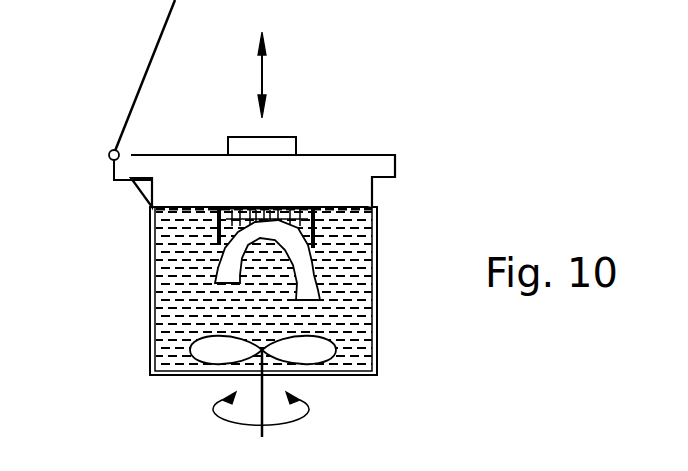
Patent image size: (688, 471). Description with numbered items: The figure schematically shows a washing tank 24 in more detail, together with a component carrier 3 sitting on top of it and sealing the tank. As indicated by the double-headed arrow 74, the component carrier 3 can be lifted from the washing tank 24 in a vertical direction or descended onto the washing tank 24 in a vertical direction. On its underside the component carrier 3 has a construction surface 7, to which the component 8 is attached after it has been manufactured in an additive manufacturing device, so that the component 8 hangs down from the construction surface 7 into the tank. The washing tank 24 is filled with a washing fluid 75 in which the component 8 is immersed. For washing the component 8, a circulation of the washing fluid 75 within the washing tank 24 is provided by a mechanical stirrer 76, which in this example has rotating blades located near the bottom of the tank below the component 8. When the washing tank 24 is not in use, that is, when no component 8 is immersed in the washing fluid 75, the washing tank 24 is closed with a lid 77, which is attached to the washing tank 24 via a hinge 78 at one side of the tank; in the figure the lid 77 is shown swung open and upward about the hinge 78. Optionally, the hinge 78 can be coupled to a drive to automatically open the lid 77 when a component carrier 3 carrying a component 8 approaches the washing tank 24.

The component carrier 3 is at (358, 170).
The construction surface 7 is at (190, 212).
The component 8 is at (307, 273).
The washing tank 24 is at (377, 255).
The arrow 74 is at (263, 75).
The washing fluid 75 is at (180, 307).
The mechanical stirrer 76 is at (320, 358).
The lid 77 is at (148, 70).
The hinge 78 is at (108, 150).